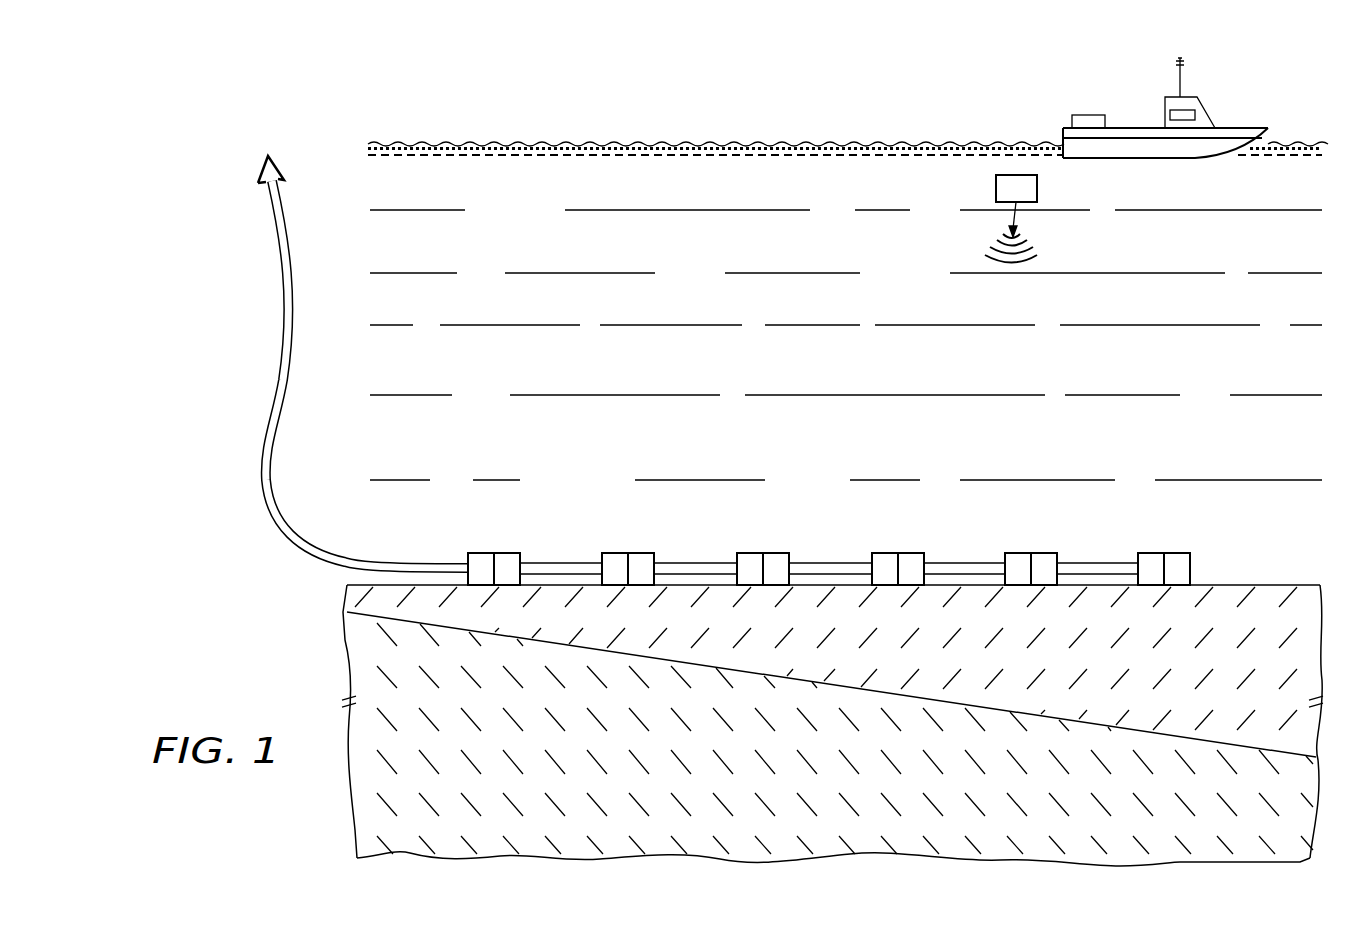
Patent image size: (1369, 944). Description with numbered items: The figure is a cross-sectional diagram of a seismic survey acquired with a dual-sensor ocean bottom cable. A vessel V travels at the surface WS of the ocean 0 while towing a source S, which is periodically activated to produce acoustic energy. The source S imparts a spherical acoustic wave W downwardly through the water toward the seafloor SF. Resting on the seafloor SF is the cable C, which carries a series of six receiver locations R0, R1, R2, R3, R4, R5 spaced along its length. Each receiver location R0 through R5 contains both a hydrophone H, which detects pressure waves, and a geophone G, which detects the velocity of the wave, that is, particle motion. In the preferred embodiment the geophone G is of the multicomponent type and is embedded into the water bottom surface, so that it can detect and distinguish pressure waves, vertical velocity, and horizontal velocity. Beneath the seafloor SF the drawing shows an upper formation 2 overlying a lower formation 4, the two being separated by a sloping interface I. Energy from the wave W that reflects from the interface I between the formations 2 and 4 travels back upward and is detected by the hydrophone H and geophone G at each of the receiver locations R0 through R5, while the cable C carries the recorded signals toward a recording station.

The surface WS is at (702, 148).
The ocean 0 is at (1207, 376).
The vessel V is at (1248, 128).
The source S is at (1062, 150).
The acoustic wave W is at (1037, 250).
The cable C is at (278, 347).
The seafloor SF is at (1262, 585).
The formation 2 is at (1215, 676).
The interface I is at (1000, 706).
The formation 4 is at (1211, 814).
The receiver location R0 is at (494, 543).
The receiver location R1 is at (626, 553).
The receiver location R2 is at (747, 553).
The receiver location R3 is at (914, 553).
The receiver location R4 is at (1032, 553).
The receiver location R5 is at (1166, 553).
The hydrophone H is at (481, 569).
The geophone G is at (507, 569).